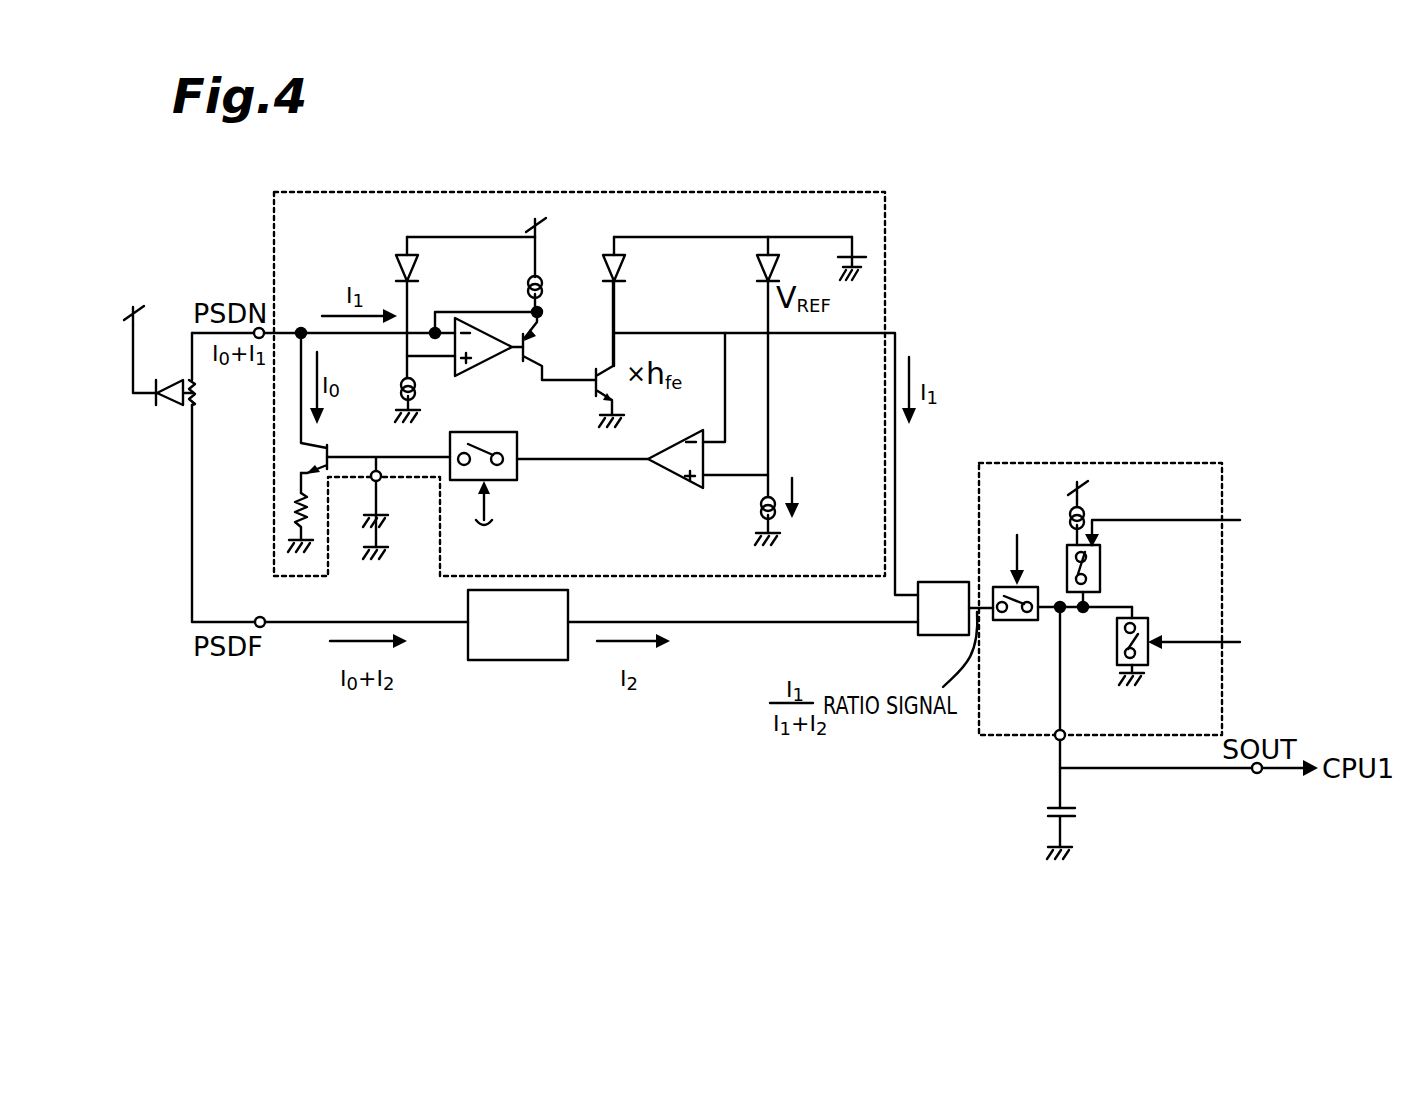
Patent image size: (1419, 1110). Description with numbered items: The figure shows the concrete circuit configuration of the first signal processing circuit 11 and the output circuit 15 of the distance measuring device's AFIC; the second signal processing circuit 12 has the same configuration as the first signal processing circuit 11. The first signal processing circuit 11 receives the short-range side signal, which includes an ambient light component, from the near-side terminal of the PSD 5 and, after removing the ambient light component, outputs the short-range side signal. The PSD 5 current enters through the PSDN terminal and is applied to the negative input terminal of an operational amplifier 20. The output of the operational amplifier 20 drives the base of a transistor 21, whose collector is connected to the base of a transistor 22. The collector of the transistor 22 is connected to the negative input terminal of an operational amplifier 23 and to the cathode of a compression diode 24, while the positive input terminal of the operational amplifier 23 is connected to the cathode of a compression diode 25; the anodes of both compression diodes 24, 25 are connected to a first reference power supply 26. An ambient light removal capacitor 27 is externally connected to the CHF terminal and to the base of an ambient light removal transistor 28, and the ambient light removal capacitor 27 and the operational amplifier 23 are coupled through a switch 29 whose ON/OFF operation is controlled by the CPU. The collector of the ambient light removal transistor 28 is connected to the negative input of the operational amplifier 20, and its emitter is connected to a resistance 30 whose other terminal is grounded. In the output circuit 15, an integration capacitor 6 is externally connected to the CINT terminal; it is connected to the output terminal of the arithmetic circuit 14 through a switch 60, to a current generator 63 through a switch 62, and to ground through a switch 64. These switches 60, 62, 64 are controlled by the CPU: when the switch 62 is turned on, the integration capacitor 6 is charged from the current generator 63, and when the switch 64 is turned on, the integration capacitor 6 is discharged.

The PSD 5 is at (160, 385).
The first signal processing circuit 11 is at (575, 192).
The second signal processing circuit 12 is at (520, 660).
The arithmetic circuit 14 is at (930, 636).
The output circuit 15 is at (1118, 463).
The operational amplifier 20 is at (466, 376).
The transistor 21 is at (520, 362).
The transistor 22 is at (594, 396).
The operational amplifier 23 is at (670, 488).
The compression diode 24 is at (604, 268).
The compression diode 25 is at (760, 268).
The first reference power supply 26 is at (860, 260).
The ambient light removal capacitor 27 is at (386, 522).
The ambient light removal transistor 28 is at (388, 466).
The switch 29 is at (517, 478).
The resistance 30 is at (300, 511).
The switch 60 is at (1018, 620).
The switch 62 is at (1065, 545).
The current generator 63 is at (1085, 503).
The switch 64 is at (1140, 618).
The integration capacitor 6 is at (1077, 812).